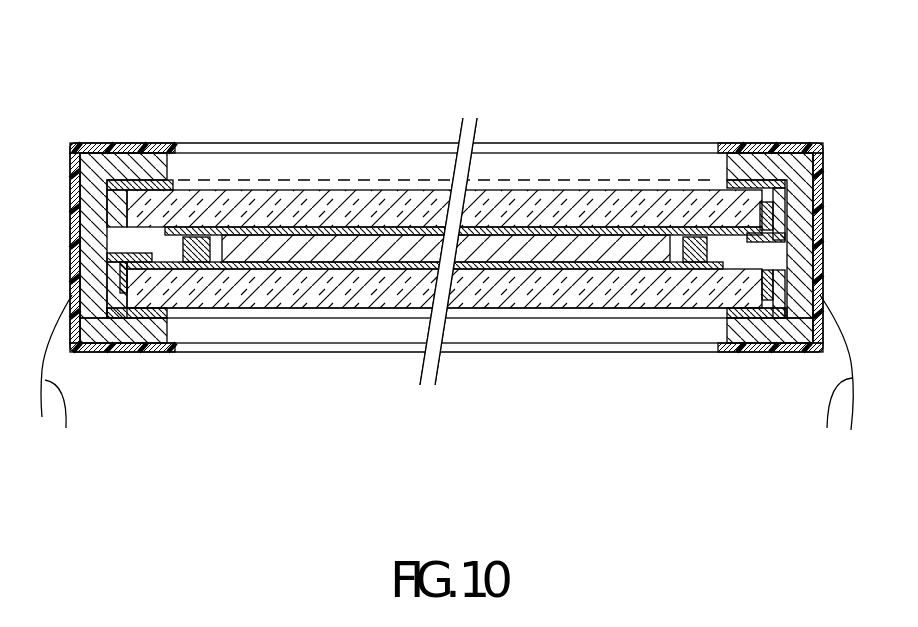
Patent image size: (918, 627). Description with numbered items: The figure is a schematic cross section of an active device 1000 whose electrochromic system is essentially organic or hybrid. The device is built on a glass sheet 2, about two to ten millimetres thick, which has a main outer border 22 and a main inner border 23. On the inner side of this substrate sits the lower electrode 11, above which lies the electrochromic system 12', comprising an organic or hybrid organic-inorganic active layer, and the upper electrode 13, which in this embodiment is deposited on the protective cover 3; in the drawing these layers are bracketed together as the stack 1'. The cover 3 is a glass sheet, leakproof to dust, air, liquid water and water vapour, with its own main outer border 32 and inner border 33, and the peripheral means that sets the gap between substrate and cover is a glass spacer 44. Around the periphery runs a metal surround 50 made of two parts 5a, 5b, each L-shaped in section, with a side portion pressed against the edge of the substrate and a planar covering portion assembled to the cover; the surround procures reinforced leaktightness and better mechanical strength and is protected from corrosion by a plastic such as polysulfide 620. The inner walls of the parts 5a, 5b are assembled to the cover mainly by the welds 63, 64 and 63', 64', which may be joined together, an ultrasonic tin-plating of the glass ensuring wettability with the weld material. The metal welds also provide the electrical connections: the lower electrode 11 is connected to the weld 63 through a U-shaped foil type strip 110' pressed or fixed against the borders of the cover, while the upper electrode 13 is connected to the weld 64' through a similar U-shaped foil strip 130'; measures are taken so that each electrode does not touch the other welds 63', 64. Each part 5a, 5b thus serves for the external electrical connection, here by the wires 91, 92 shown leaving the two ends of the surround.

The active device 1000 is at (369, 205).
The metal surround 50 is at (108, 138).
The polysulfide 620 is at (73, 226).
The first part of the surround 5a is at (80, 163).
The second part of the surround 5b is at (810, 143).
The weld 63 is at (123, 366).
The weld 63' is at (770, 359).
The weld 64 is at (91, 200).
The weld 64' is at (763, 165).
The U-shaped foil type strip 130' is at (819, 214).
The U-shaped foil type strip 110' is at (396, 285).
The protective cover 3 is at (408, 200).
The main outer border of the cover 32 is at (543, 230).
The inner border of the cover 33 is at (592, 236).
The glass spacer 44 is at (197, 238).
The inner border of the glass sheet 23 is at (637, 268).
The glass sheet 2 is at (487, 292).
The outer border of the glass sheet 22 is at (562, 312).
The lower electrode 11 is at (183, 270).
The upper electrode 13 is at (253, 238).
The electrochromic system 12' is at (340, 329).
The electrochemical cell 1' is at (281, 433).
The wire 91 is at (54, 378).
The wire 92 is at (835, 378).